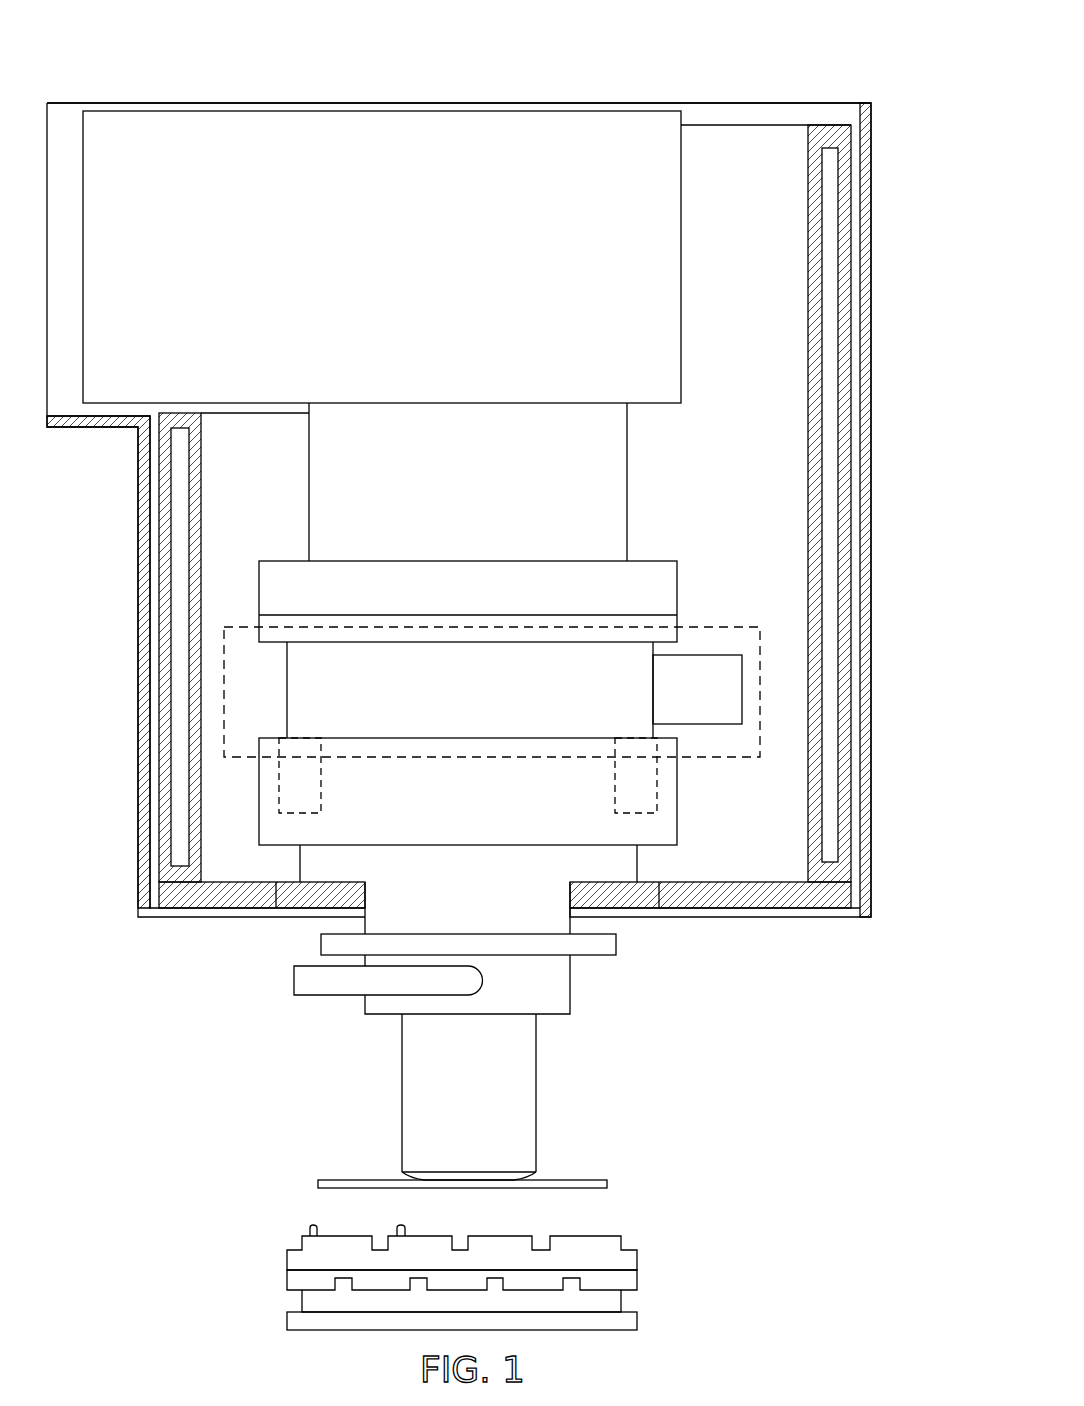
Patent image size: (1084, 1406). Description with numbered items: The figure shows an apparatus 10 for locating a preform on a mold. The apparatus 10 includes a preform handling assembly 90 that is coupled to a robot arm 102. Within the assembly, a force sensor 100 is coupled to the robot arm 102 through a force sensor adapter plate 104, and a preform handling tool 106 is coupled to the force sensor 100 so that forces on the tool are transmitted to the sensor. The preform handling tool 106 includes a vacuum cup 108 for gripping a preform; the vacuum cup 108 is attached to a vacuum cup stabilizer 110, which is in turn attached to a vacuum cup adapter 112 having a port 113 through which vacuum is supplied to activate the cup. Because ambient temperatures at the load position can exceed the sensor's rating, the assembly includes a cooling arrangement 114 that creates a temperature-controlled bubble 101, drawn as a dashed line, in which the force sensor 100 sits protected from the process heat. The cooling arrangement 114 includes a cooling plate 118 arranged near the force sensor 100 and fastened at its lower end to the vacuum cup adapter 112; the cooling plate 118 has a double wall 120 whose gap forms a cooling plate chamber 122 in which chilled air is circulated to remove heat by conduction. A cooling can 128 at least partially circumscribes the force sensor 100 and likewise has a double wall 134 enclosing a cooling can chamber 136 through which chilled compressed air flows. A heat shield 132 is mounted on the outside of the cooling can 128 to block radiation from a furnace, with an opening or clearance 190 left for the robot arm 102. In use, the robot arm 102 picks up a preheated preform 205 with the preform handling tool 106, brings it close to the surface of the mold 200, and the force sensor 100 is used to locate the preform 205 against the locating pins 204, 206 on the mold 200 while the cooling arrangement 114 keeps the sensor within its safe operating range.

The apparatus 10 is at (564, 78).
The preform handling assembly 90 is at (769, 108).
The opening or clearance 190 is at (708, 163).
The robot arm 102 is at (380, 125).
The heat shield 132 is at (870, 360).
The force sensor adapter plate 104 is at (612, 483).
The force sensor 100 is at (702, 672).
The temperature-controlled bubble 101 is at (760, 643).
The double wall 134 is at (170, 600).
The cooling can 128 is at (160, 657).
The cooling can chamber 136 is at (182, 705).
The cooling arrangement 114 is at (862, 696).
The double wall 120 is at (270, 748).
The cooling plate 118 is at (677, 793).
The cooling plate chamber 122 is at (304, 813).
The vacuum cup adapter 112 is at (572, 983).
The port 113 is at (335, 983).
The preform handling tool 106 is at (552, 1040).
The vacuum cup stabilizer 110 is at (520, 1090).
The vacuum cup 108 is at (486, 1176).
The preform 205 is at (595, 1180).
The mold 200 is at (605, 1243).
The locating pin 204 is at (310, 1225).
The locating pin 206 is at (400, 1225).